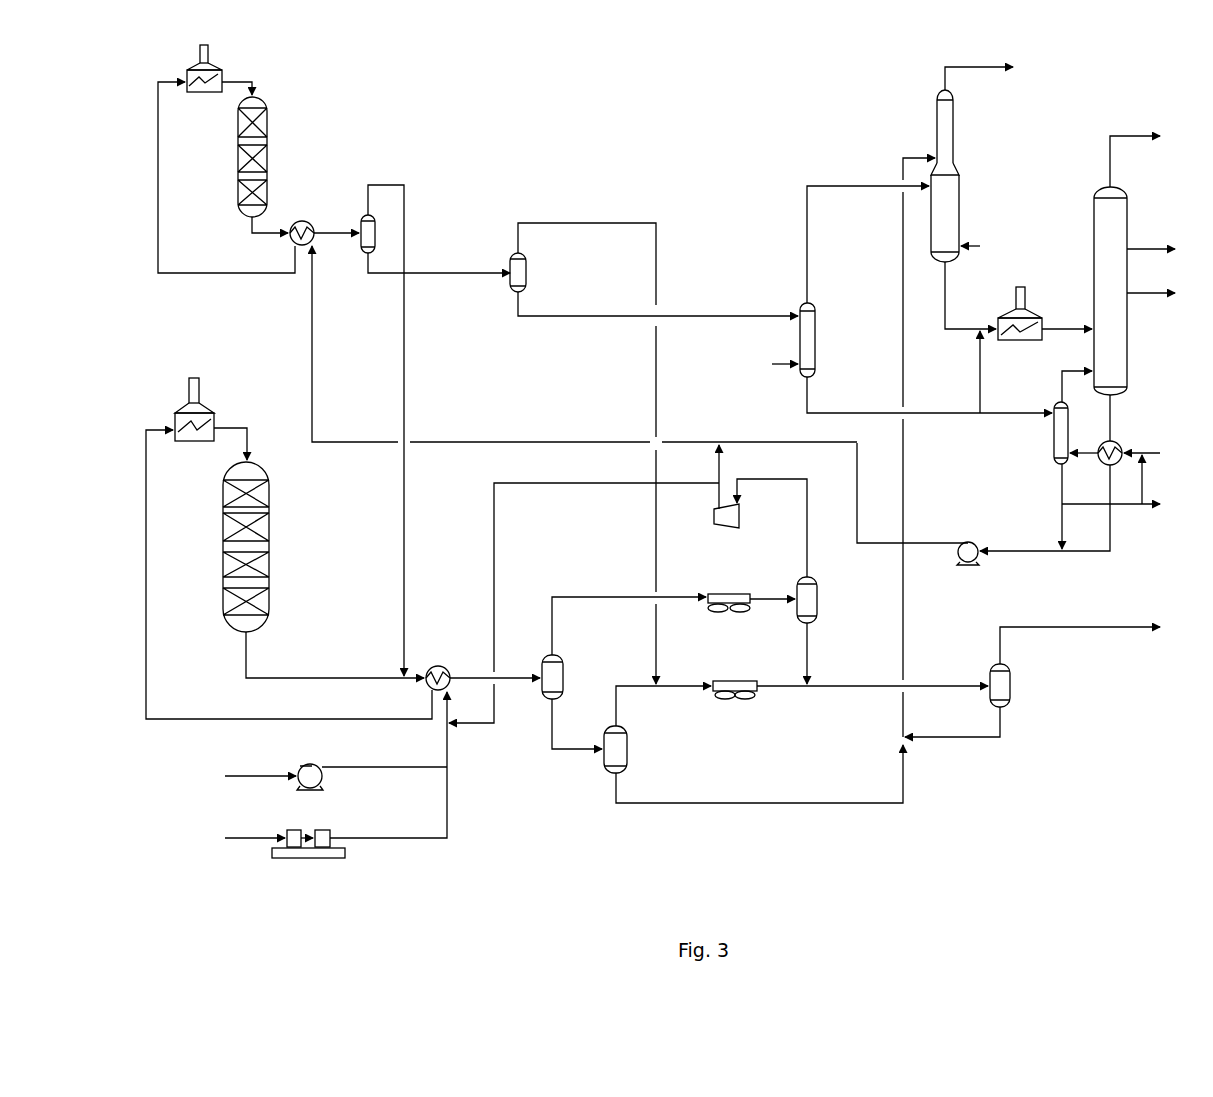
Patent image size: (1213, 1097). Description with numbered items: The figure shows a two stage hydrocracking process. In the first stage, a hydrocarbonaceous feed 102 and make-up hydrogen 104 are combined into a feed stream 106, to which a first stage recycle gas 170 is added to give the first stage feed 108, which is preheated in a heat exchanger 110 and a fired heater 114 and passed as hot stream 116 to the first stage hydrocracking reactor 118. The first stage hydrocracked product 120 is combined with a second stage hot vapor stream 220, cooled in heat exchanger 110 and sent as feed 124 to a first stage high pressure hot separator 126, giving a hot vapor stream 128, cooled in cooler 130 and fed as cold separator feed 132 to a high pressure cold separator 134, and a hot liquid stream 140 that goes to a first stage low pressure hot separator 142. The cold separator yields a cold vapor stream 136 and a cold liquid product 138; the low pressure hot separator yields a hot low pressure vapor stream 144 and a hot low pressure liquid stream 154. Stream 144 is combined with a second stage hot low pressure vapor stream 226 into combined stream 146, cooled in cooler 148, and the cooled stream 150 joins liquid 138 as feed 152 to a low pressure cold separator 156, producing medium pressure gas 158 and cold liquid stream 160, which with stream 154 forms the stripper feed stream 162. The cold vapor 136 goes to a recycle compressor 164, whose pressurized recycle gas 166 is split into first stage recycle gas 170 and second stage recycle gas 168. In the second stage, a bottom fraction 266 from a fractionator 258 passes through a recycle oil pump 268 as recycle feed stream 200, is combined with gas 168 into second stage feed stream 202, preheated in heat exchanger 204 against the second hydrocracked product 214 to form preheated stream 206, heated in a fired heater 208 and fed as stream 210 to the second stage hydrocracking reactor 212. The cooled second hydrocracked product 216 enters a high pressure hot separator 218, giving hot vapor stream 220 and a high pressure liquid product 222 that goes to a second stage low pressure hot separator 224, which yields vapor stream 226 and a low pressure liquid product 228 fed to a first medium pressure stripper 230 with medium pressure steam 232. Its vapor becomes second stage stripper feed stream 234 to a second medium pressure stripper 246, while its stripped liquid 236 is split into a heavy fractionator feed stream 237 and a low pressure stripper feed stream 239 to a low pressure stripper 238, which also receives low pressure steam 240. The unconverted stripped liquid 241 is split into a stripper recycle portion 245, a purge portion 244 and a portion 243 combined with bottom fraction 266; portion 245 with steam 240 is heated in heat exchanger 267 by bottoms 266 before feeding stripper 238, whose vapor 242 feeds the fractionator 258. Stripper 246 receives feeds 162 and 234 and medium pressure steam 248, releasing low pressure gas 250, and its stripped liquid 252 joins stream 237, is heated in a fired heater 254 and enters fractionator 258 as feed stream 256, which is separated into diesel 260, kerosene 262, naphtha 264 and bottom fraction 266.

The hydrocarbonaceous feed 102 is at (250, 775).
The make-up hydrogen 104 is at (250, 838).
The feed stream 106 is at (449, 742).
The first stage feed 108 is at (449, 702).
The heat exchanger 110 is at (439, 665).
The fired heater 114 is at (192, 441).
The hot stream for hydrocracking 116 is at (242, 427).
The first stage hydrocracking reactor 118 is at (270, 578).
The first stage hydrocracked product 120 is at (322, 678).
The high pressure hot separator feed 124 is at (522, 678).
The first stage high pressure hot separator 126 is at (565, 664).
The first stage hot vapor stream 128 is at (612, 597).
The cooler 130 is at (722, 594).
The cold separator feed 132 is at (773, 600).
The high pressure cold separator 134 is at (818, 585).
The first stage cold vapor stream 136 is at (807, 562).
The first stage cold liquid product 138 is at (807, 650).
The first stage hot liquid stream 140 is at (552, 730).
The first stage low pressure hot separator 142 is at (628, 738).
The first stage hot low pressure vapor stream 144 is at (640, 686).
The combined hot low pressure vapor stream 146 is at (690, 686).
The cooler 148 is at (720, 681).
The cooled low pressure vapor stream 150 is at (782, 686).
The low pressure cold separator feed stream 152 is at (947, 686).
The first stage hot low pressure liquid stream 154 is at (785, 803).
The low pressure cold separator 156 is at (1012, 678).
The medium pressure gas 158 is at (1090, 627).
The cold liquid stream 160 is at (944, 737).
The stripper feed stream 162 is at (903, 158).
The recycle compressor 164 is at (730, 528).
The pressurized recycle gas 166 is at (714, 508).
The second stage recycle gas 168 is at (719, 462).
The first stage recycle gas 170 is at (494, 555).
The recycle feed stream 200 is at (880, 543).
The second stage feed stream 202 is at (447, 442).
The heat exchanger 204 is at (302, 221).
The preheated second stage feed stream 206 is at (158, 160).
The fired heater 208 is at (203, 92).
The second stage feed stream 210 is at (252, 80).
The second stage hydrocracking reactor 212 is at (268, 133).
The second hydrocracked product 214 is at (247, 230).
The cooled second hydrocracked product 216 is at (338, 240).
The high pressure hot separator 218 is at (365, 215).
The hot vapor stream 220 is at (402, 185).
The high pressure liquid product 222 is at (442, 272).
The second stage low pressure hot separator 224 is at (528, 265).
The second stage hot low pressure vapor stream 226 is at (590, 223).
The low pressure liquid product 228 is at (747, 316).
The first medium pressure stripper 230 is at (816, 338).
The medium pressure steam 232 is at (774, 366).
The second stage stripper feed stream 234 is at (814, 186).
The stripped liquid stream 236 is at (955, 413).
The heavy fractionator feed stream 237 is at (978, 350).
The low pressure stripper 238 is at (1054, 430).
The low pressure stripper feed stream 239 is at (1007, 413).
The low pressure steam 240 is at (1150, 453).
The unconverted stripped liquid 241 is at (1062, 480).
The stripper vapor 242 is at (1062, 371).
The portion combined with fractionator bottoms 243 is at (1062, 528).
The purge portion 244 is at (1148, 504).
The stripper recycle portion 245 is at (1142, 473).
The second medium pressure stripper 246 is at (960, 185).
The medium pressure steam 248 is at (970, 246).
The low pressure gas 250 is at (963, 67).
The stripped liquid 252 is at (972, 329).
The fired heater 254 is at (1019, 340).
The fractionator feed stream 256 is at (1062, 329).
The fractionator 258 is at (1128, 338).
The diesel 260 is at (1141, 293).
The kerosene 262 is at (1141, 249).
The naphtha 264 is at (1121, 136).
The bottom fraction 266 is at (1112, 402).
The heat exchanger 267 is at (1118, 443).
The recycle oil pump 268 is at (968, 542).